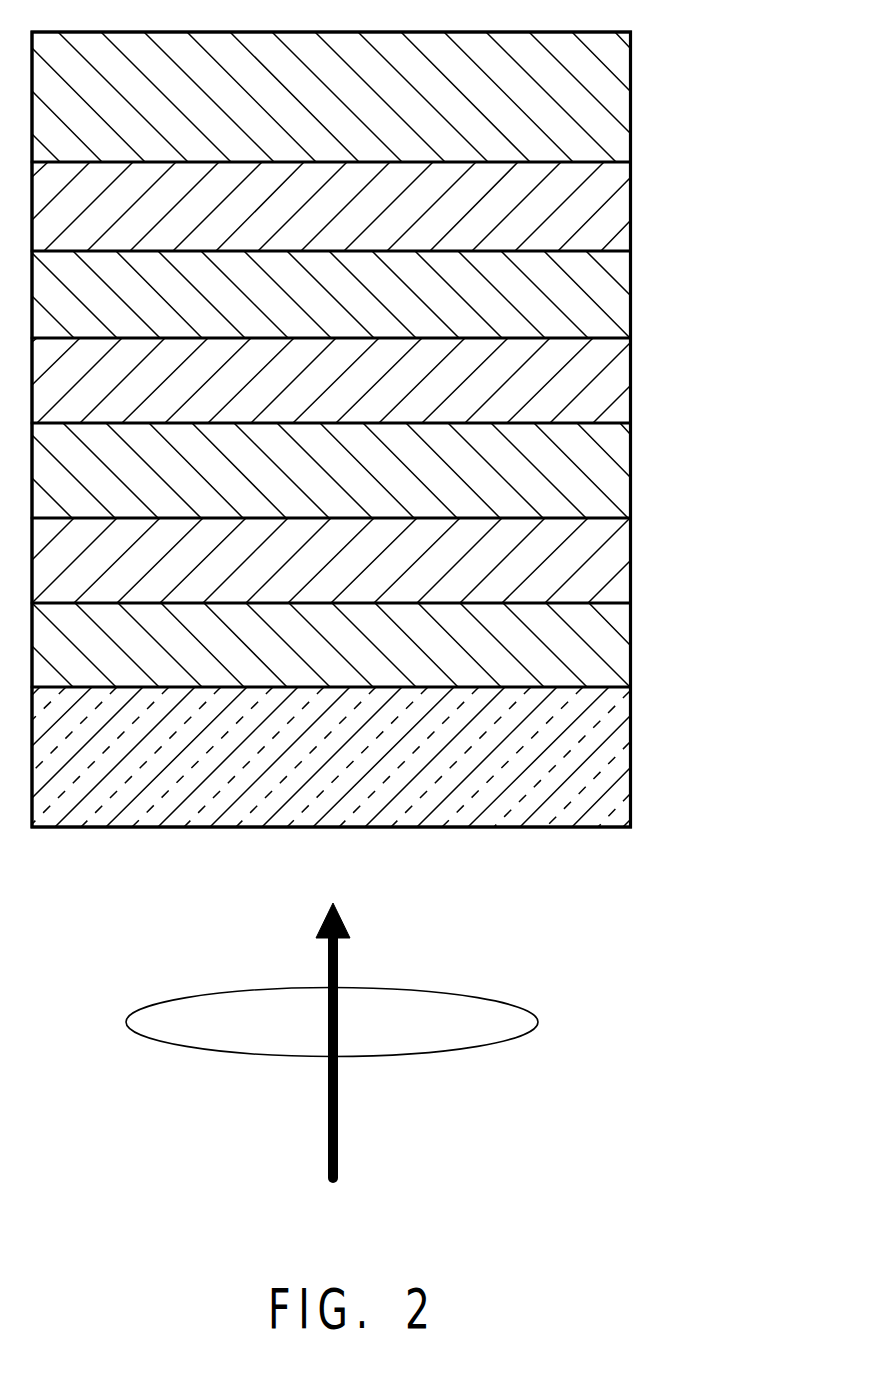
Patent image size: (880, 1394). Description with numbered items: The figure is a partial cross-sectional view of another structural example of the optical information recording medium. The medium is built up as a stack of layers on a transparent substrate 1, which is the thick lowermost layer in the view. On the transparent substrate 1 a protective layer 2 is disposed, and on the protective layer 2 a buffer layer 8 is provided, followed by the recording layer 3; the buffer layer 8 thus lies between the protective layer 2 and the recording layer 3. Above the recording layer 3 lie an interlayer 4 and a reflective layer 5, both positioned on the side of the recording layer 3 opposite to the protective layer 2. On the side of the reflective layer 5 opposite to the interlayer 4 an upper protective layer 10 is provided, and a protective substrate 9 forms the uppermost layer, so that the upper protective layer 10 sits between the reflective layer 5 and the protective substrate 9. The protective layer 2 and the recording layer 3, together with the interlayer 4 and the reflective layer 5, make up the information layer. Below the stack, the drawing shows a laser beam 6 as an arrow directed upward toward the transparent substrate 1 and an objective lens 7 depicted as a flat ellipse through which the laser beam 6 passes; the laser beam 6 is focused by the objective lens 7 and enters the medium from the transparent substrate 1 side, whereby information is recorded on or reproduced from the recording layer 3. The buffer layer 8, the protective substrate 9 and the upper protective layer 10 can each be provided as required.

The transparent substrate 1 is at (618, 775).
The protective layer 2 is at (619, 647).
The recording layer 3 is at (618, 477).
The interlayer 4 is at (620, 392).
The reflective layer 5 is at (620, 307).
The laser beam 6 is at (338, 1140).
The objective lens 7 is at (538, 1023).
The buffer layer 8 is at (618, 562).
The protective substrate 9 is at (618, 112).
The upper protective layer 10 is at (617, 220).